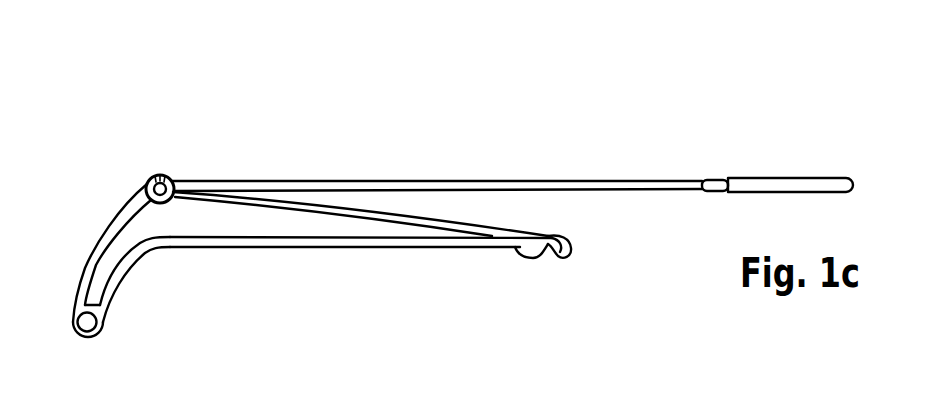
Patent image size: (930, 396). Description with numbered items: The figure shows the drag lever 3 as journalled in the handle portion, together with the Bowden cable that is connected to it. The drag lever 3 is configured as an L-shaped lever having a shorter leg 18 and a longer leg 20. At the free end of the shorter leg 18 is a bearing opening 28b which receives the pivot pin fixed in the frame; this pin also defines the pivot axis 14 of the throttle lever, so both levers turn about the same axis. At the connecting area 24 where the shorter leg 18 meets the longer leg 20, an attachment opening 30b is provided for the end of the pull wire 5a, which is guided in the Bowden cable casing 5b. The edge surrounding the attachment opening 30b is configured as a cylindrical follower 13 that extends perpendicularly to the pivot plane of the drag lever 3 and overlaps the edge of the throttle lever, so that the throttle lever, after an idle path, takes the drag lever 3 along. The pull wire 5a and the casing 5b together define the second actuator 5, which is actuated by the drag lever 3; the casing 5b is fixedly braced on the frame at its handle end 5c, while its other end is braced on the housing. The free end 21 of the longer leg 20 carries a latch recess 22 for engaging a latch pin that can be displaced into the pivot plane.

The drag lever 3 is at (293, 240).
The actuator 5 is at (518, 152).
The pull wire 5a is at (606, 181).
The Bowden cable casing 5b is at (814, 179).
The handle end 5c is at (722, 178).
The cylindrical follower 13 is at (168, 180).
The pivot axis 14 is at (94, 321).
The shorter leg 18 is at (125, 222).
The longer leg 20 is at (378, 223).
The free end 21 is at (550, 236).
The latch recess 22 is at (545, 253).
The connecting area 24 is at (118, 189).
The bearing opening 28b is at (90, 337).
The attachment opening 30b is at (151, 181).